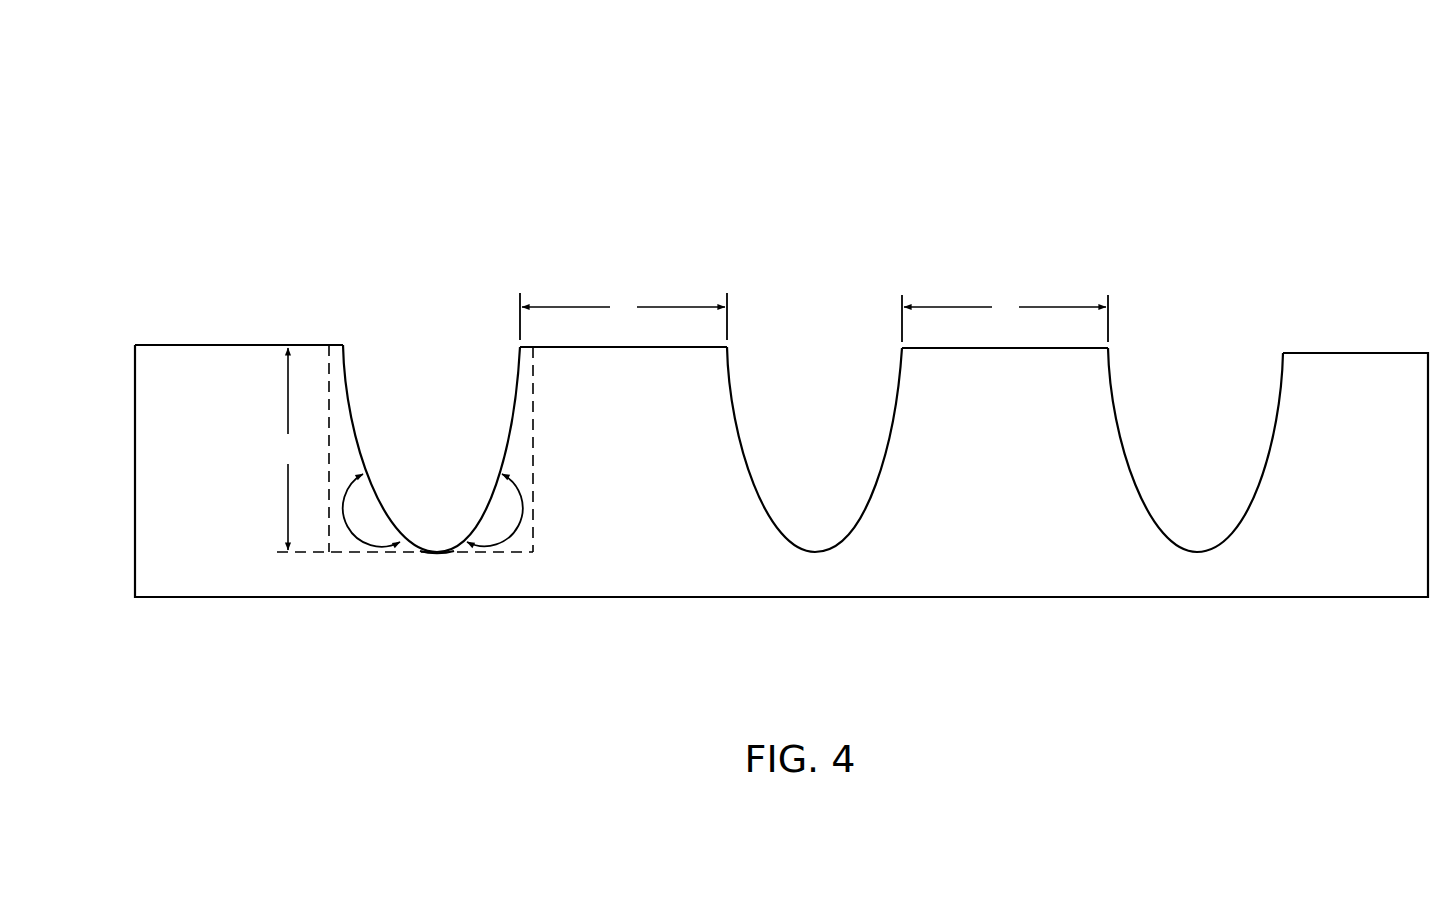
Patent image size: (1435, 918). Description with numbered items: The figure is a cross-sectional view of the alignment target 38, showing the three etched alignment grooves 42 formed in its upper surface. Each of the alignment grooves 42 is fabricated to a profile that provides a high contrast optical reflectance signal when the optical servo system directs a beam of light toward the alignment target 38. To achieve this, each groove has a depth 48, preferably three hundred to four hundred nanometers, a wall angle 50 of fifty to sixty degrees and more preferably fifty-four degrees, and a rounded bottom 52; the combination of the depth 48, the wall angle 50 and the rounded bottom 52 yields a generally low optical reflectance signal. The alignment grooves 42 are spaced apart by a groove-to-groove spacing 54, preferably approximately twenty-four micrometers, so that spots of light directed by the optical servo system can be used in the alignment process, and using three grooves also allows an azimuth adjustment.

The alignment target 38 is at (773, 344).
The alignment grooves 42 is at (1187, 351).
The depth (D) 48 is at (277, 447).
The wall angle (θ) 50 is at (533, 528).
The rounded bottom 52 is at (446, 562).
The groove-to-groove spacing (S) 54 is at (622, 294).